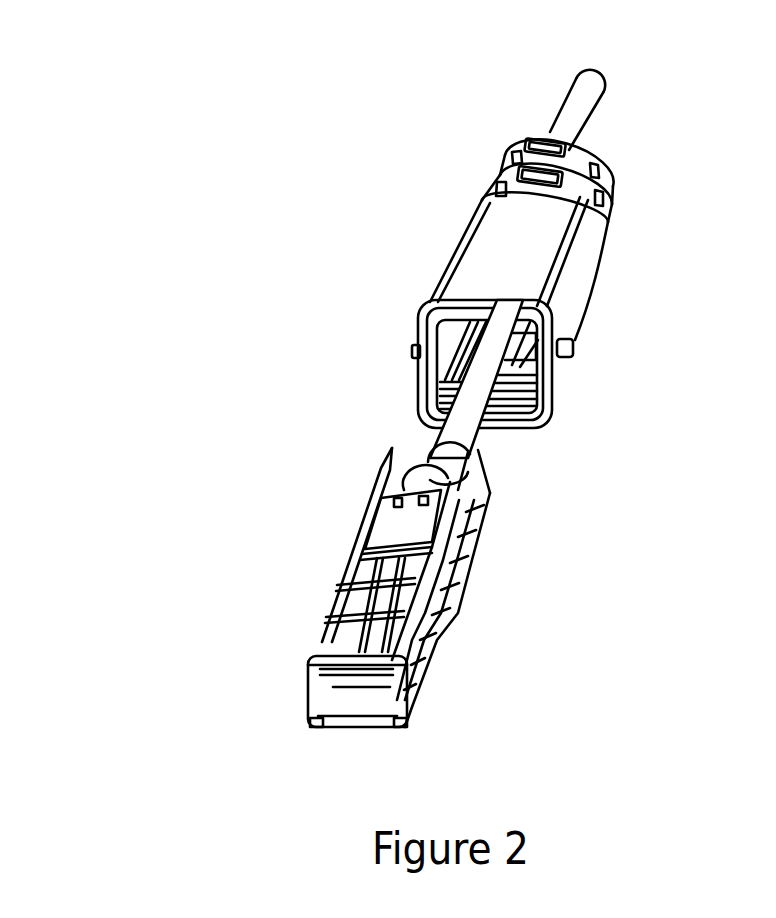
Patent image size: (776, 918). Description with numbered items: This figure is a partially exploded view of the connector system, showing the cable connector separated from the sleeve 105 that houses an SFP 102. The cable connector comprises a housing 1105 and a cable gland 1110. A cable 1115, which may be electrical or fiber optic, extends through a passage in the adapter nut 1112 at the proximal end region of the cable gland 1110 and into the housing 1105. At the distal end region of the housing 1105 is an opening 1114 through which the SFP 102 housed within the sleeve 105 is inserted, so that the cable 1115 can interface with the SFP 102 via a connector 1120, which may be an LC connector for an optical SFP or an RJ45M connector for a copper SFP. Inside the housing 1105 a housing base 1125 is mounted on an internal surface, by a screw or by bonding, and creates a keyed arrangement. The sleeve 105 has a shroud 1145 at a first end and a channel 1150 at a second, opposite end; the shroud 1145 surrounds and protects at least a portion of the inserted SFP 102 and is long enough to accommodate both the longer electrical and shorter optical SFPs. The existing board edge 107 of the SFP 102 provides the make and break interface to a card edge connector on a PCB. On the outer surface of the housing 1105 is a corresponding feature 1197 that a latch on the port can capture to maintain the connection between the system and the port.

The SFP 102 is at (383, 537).
The sleeve 105 is at (347, 630).
The board edge 107 is at (363, 697).
The housing 1105 is at (475, 260).
The cable gland 1110 is at (503, 163).
The adapter nut 1112 is at (547, 133).
The opening 1114 is at (445, 349).
The cable 1115 is at (590, 112).
The connector 1120 is at (395, 453).
The housing base 1125 is at (502, 405).
The shroud 1145 is at (440, 672).
The channel 1150 is at (490, 526).
The corresponding feature 1197 is at (573, 343).